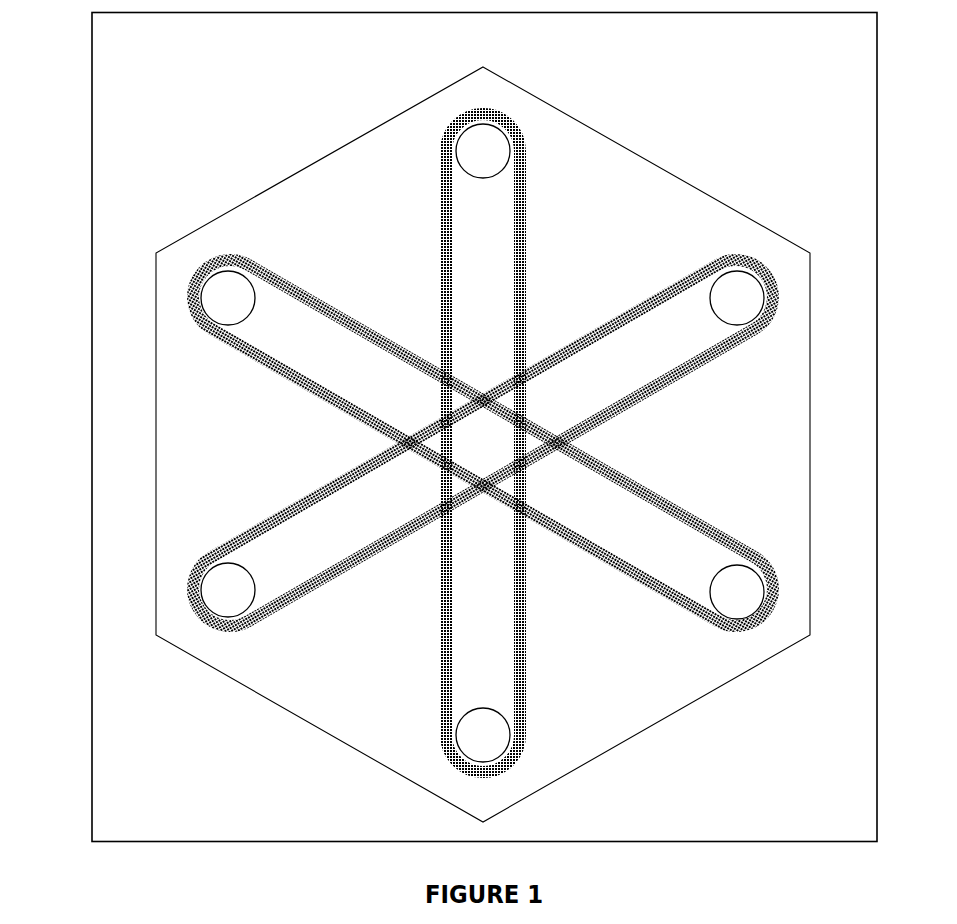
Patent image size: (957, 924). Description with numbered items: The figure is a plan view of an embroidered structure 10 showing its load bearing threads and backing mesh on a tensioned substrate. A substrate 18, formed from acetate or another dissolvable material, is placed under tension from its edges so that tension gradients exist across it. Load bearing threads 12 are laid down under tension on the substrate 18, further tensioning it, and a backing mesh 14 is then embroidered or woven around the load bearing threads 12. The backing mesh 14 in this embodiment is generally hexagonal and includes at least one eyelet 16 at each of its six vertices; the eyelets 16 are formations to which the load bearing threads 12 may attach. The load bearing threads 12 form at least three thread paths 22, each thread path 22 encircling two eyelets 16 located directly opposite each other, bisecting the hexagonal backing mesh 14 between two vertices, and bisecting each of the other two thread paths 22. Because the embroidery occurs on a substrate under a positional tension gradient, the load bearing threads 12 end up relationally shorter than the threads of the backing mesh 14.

The embroidered structure 10 is at (483, 432).
The load bearing threads 12 is at (522, 282).
The backing mesh 14 is at (305, 170).
The eyelets 16 is at (488, 153).
The substrate 18 is at (90, 740).
The thread paths 22 is at (413, 225).